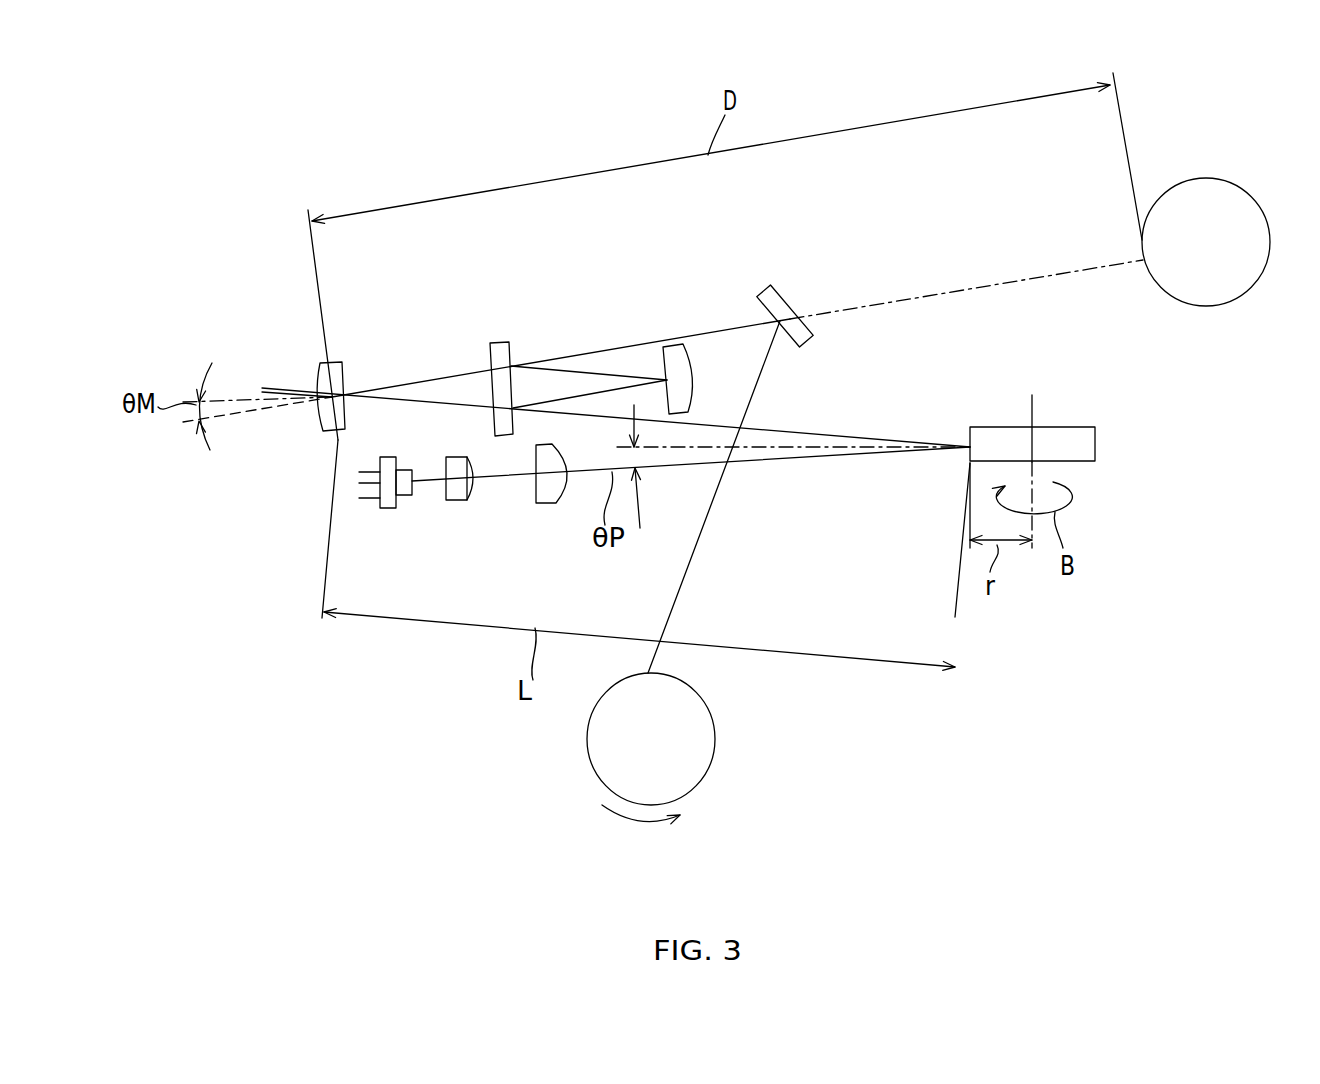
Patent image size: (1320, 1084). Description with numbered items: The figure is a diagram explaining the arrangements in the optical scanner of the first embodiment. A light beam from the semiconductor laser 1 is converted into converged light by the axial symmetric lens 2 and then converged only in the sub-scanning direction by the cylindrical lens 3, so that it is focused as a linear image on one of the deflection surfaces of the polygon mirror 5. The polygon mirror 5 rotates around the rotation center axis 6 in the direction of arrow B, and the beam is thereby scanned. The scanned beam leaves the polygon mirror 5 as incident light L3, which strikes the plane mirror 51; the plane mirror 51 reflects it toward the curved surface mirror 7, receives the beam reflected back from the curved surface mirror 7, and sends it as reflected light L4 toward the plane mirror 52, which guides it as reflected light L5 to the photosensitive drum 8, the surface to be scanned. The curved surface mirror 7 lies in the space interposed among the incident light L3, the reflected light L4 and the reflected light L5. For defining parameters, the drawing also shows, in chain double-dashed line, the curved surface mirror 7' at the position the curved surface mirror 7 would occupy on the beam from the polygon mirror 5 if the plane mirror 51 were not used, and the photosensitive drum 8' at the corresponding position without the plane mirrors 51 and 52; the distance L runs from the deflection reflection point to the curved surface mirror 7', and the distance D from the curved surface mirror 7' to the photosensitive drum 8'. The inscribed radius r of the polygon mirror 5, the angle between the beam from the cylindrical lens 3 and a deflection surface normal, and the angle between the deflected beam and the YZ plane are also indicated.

The semiconductor laser 1 is at (380, 508).
The axial symmetric lens 2 is at (455, 500).
The cylindrical lens 3 is at (545, 503).
The polygon mirror 5 is at (1060, 427).
The rotation center axis 6 is at (1032, 410).
The curved surface mirror 7 is at (677, 330).
The curved surface mirror 7' is at (307, 335).
The photosensitive drum 8 is at (690, 748).
The photosensitive drum 8' is at (1206, 176).
The plane mirror 51 is at (500, 342).
The plane mirror 52 is at (782, 293).
The incident light L3 is at (860, 438).
The reflected light L4 is at (615, 348).
The reflected light L5 is at (697, 545).